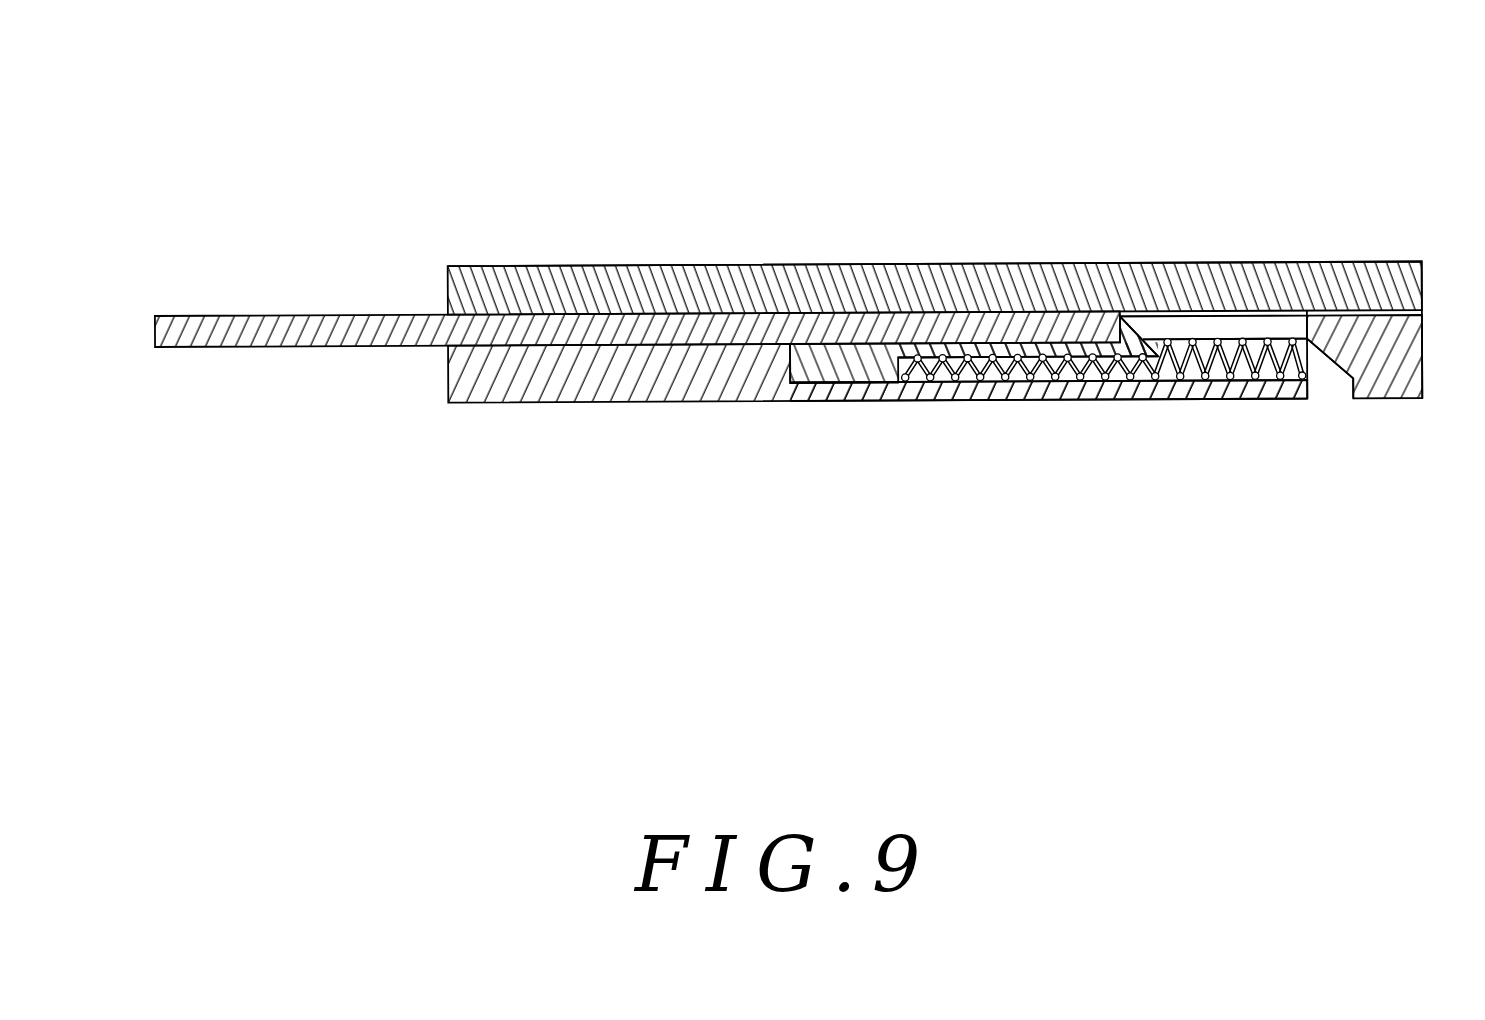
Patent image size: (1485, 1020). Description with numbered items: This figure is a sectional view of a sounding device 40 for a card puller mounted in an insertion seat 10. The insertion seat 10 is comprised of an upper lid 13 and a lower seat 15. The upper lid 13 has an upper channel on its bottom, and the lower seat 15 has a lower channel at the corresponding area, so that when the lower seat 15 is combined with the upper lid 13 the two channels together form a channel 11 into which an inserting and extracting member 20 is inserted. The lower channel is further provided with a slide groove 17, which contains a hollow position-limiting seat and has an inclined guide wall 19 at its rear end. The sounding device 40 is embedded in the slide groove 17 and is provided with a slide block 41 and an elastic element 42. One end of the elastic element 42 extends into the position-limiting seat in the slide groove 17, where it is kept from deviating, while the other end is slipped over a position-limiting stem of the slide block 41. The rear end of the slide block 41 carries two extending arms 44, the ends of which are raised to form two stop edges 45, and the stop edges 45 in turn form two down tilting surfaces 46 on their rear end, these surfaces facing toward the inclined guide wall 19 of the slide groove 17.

The insertion seat 10 is at (1337, 258).
The channel 11 is at (1166, 330).
The upper lid 13 is at (607, 278).
The lower seat 15 is at (562, 393).
The slide groove 17 is at (940, 390).
The inclined guide wall 19 is at (1330, 372).
The inserting and extracting member 20 is at (307, 312).
The sounding device 40 is at (1253, 337).
The slide block 41 is at (807, 345).
The elastic element 42 is at (1237, 347).
The extending arms 44 is at (967, 353).
The stop edges 45 is at (1113, 338).
The down tilting surfaces 46 is at (1140, 320).